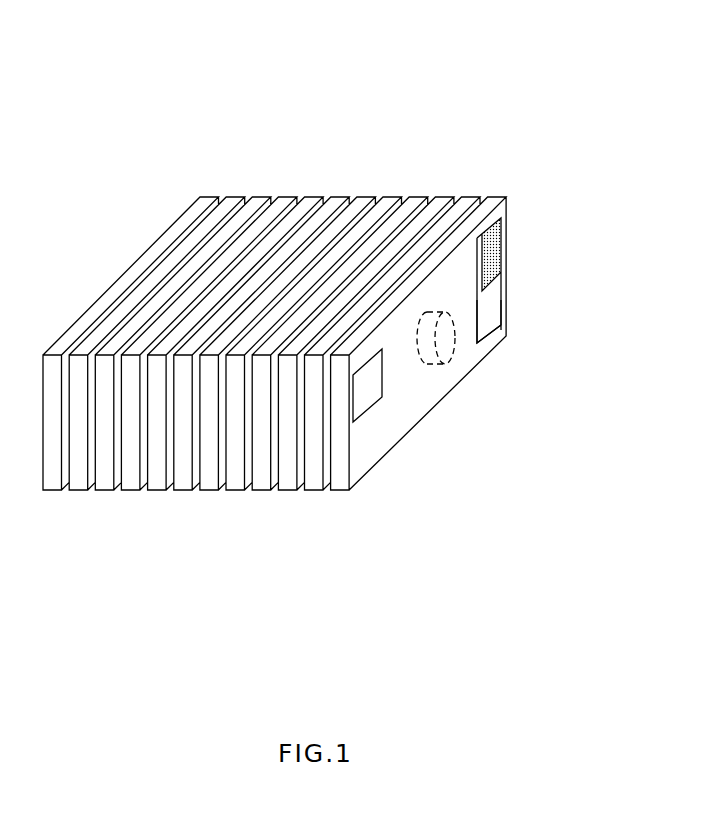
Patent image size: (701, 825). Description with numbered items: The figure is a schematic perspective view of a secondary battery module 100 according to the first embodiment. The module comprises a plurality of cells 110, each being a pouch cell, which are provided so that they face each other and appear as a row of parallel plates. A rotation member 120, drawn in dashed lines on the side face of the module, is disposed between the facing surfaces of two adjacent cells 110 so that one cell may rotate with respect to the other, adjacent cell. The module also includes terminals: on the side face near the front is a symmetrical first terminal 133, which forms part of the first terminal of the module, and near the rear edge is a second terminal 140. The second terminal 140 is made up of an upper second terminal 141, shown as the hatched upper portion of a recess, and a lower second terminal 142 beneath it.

The secondary battery module 100 is at (223, 69).
The cell 110 is at (502, 212).
The rotation member 120 is at (445, 338).
The symmetrical first terminal 133 is at (366, 387).
The second terminal 140 is at (552, 280).
The upper second terminal 141 is at (492, 255).
The lower second terminal 142 is at (488, 307).